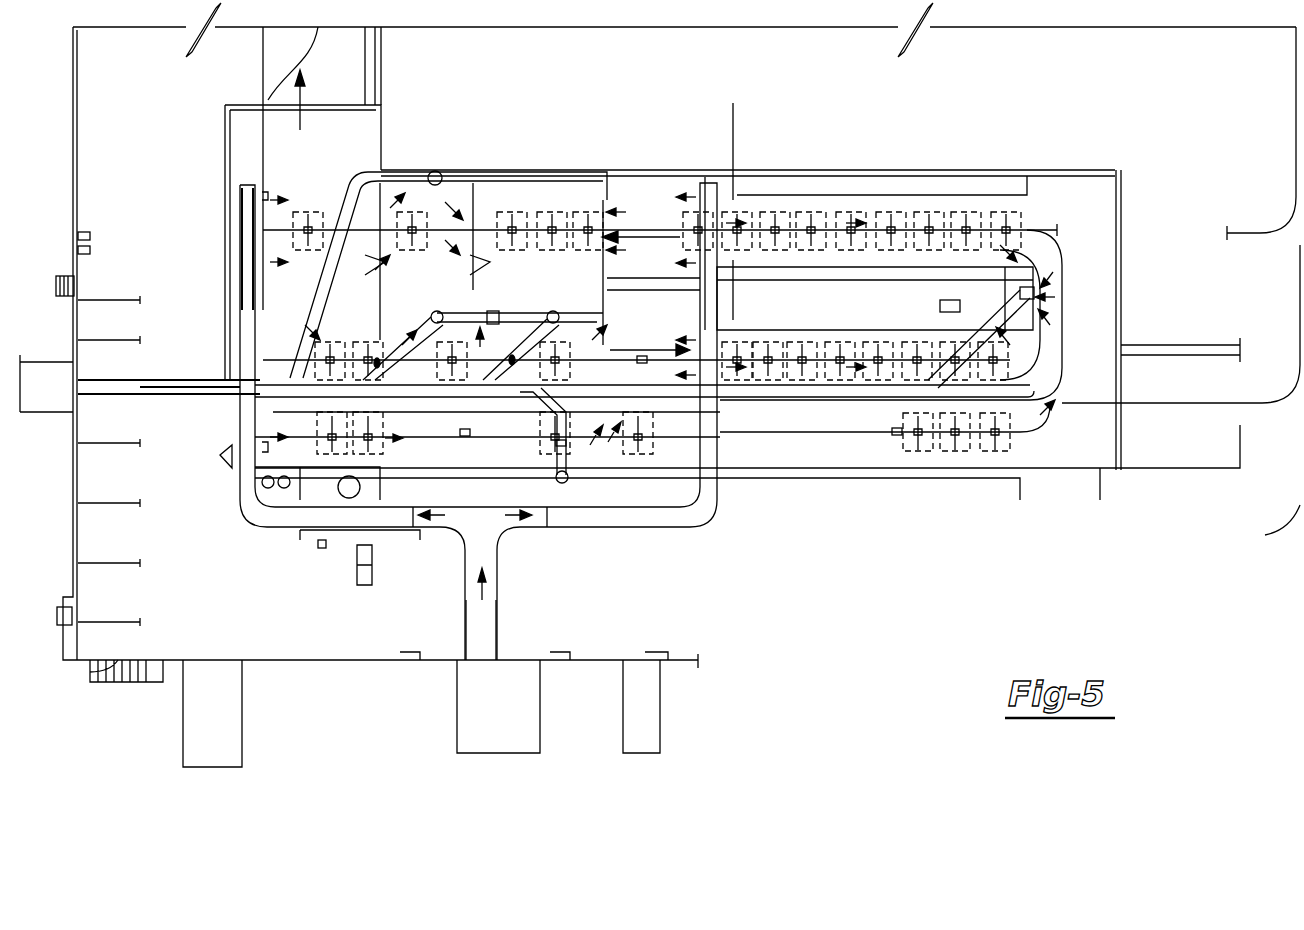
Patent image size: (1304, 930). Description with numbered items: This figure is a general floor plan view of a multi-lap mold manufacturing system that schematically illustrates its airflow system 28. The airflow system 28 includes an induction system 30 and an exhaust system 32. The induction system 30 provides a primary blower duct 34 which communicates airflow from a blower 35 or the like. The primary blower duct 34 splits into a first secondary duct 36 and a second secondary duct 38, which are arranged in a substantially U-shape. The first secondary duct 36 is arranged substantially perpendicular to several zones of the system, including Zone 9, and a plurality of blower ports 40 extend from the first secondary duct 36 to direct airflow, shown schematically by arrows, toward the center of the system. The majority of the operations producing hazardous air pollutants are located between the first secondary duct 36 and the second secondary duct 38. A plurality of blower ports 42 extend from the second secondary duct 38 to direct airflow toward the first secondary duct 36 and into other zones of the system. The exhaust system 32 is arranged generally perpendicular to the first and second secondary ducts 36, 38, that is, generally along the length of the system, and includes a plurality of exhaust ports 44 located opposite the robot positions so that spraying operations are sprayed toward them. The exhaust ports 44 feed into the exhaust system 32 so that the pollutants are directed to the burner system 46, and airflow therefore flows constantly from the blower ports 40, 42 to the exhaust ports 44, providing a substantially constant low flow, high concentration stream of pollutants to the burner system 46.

The Zone 9 is at (294, 207).
The airflow system 28 is at (997, 152).
The induction system 30 is at (506, 626).
The exhaust system 32 is at (182, 400).
The primary blower duct 34 is at (492, 558).
The blower 35 is at (510, 718).
The first secondary duct 36 is at (242, 226).
The second secondary duct 38 is at (692, 248).
The blower ports 40 is at (268, 192).
The blower ports 42 is at (725, 225).
The exhaust ports 44 is at (437, 172).
The burner system 46 is at (22, 398).